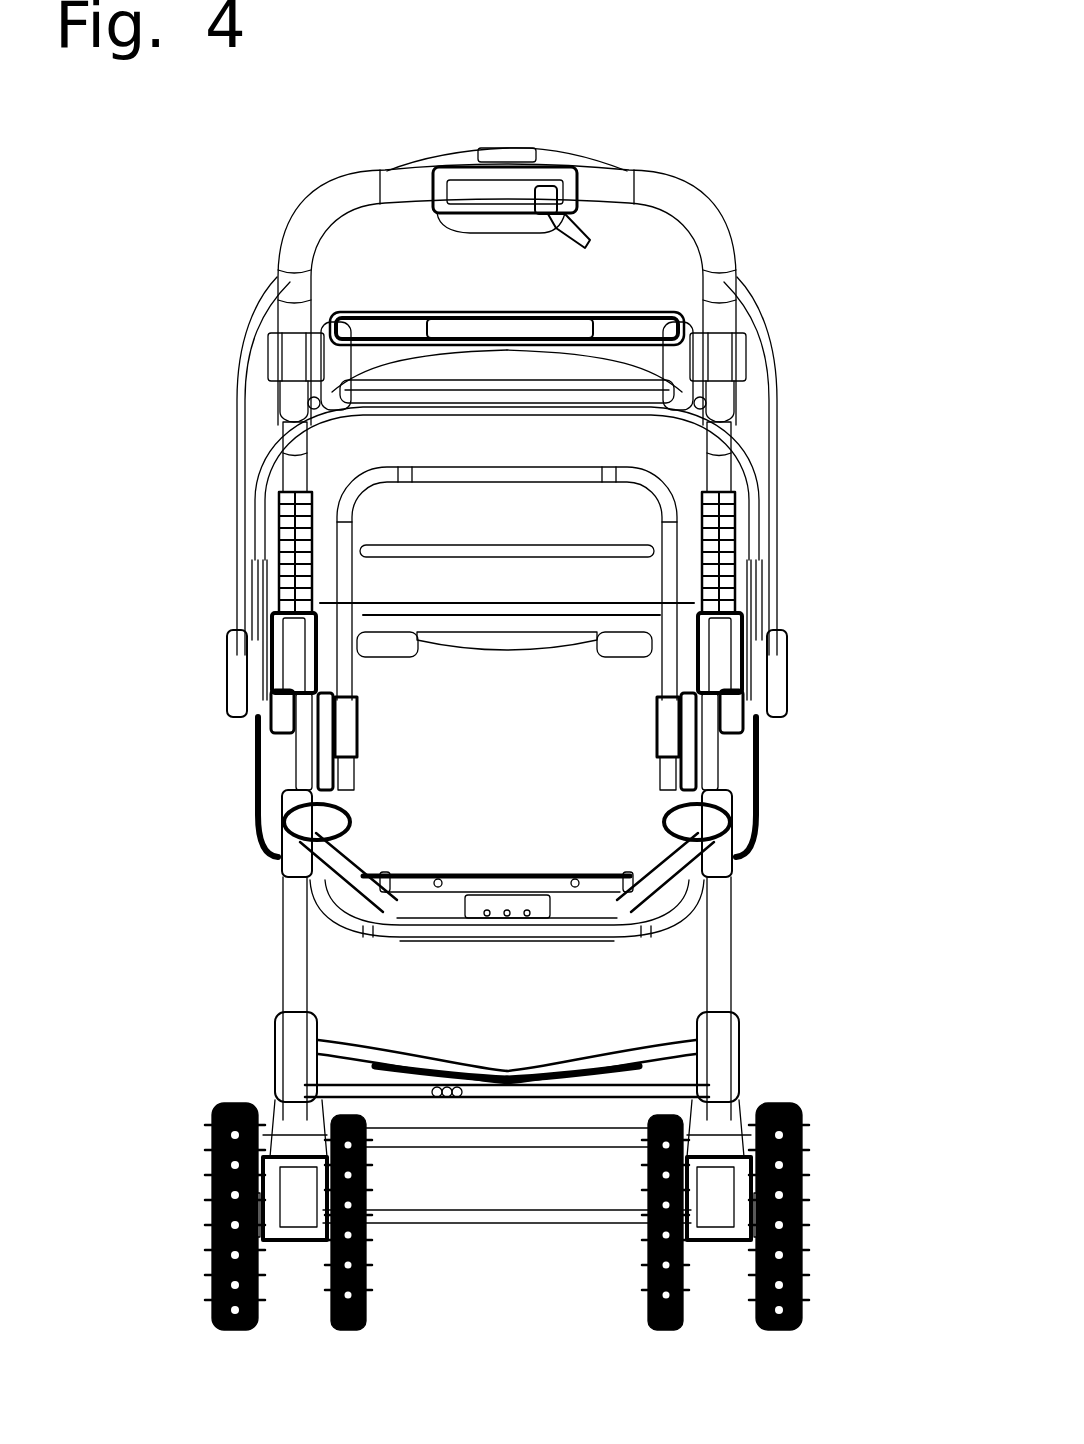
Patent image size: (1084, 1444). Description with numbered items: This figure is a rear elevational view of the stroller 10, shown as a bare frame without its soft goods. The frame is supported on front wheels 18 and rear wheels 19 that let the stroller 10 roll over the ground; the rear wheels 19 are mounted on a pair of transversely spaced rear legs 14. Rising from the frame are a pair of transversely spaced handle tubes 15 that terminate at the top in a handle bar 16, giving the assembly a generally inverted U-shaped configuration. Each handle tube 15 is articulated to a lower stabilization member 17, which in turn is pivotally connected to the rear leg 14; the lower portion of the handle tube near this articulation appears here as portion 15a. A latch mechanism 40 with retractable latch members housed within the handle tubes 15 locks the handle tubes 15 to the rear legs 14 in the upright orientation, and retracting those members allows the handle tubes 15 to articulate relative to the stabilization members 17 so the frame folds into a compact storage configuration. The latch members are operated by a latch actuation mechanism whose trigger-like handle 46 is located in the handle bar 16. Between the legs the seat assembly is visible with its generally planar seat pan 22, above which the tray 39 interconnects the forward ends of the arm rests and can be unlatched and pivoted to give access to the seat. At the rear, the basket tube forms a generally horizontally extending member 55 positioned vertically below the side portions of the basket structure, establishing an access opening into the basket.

The stroller 10 is at (800, 209).
The latch mechanism 40 is at (522, 118).
The handle bar 16 is at (610, 185).
The trigger-like handle 46 is at (558, 232).
The handle tubes 15 is at (718, 407).
The tray 39 is at (553, 613).
The lower stabilization member 17 is at (768, 807).
The seat pan 22 is at (483, 887).
The lower frame bow 15a is at (345, 918).
The horizontally extending member 55 is at (583, 937).
The rear legs 14 is at (720, 917).
The rear wheels 19 is at (200, 1130).
The front wheels 18 is at (645, 1262).